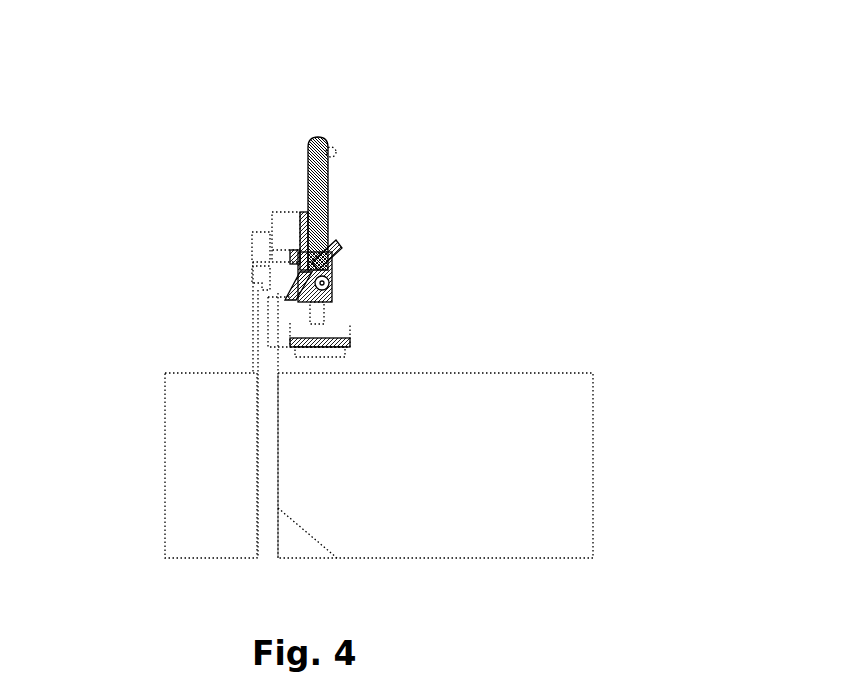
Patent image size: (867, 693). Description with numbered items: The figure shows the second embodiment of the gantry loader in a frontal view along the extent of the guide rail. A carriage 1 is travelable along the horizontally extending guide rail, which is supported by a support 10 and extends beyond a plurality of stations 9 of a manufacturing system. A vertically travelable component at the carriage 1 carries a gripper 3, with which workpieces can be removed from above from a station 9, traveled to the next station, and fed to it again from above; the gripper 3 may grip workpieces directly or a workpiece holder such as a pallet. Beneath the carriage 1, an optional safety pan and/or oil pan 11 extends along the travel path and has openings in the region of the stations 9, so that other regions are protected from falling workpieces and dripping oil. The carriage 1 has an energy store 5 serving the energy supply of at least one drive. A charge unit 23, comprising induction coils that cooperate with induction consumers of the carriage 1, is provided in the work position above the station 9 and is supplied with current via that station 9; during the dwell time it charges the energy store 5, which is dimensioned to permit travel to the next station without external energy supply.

The carriage 1 is at (680, 142).
The gripper 3 is at (383, 230).
The energy store 5 is at (254, 175).
The station 9 is at (432, 409).
The support 10 is at (214, 410).
The safety pan and/or oil pan 11 is at (412, 323).
The charge unit 23 is at (160, 244).